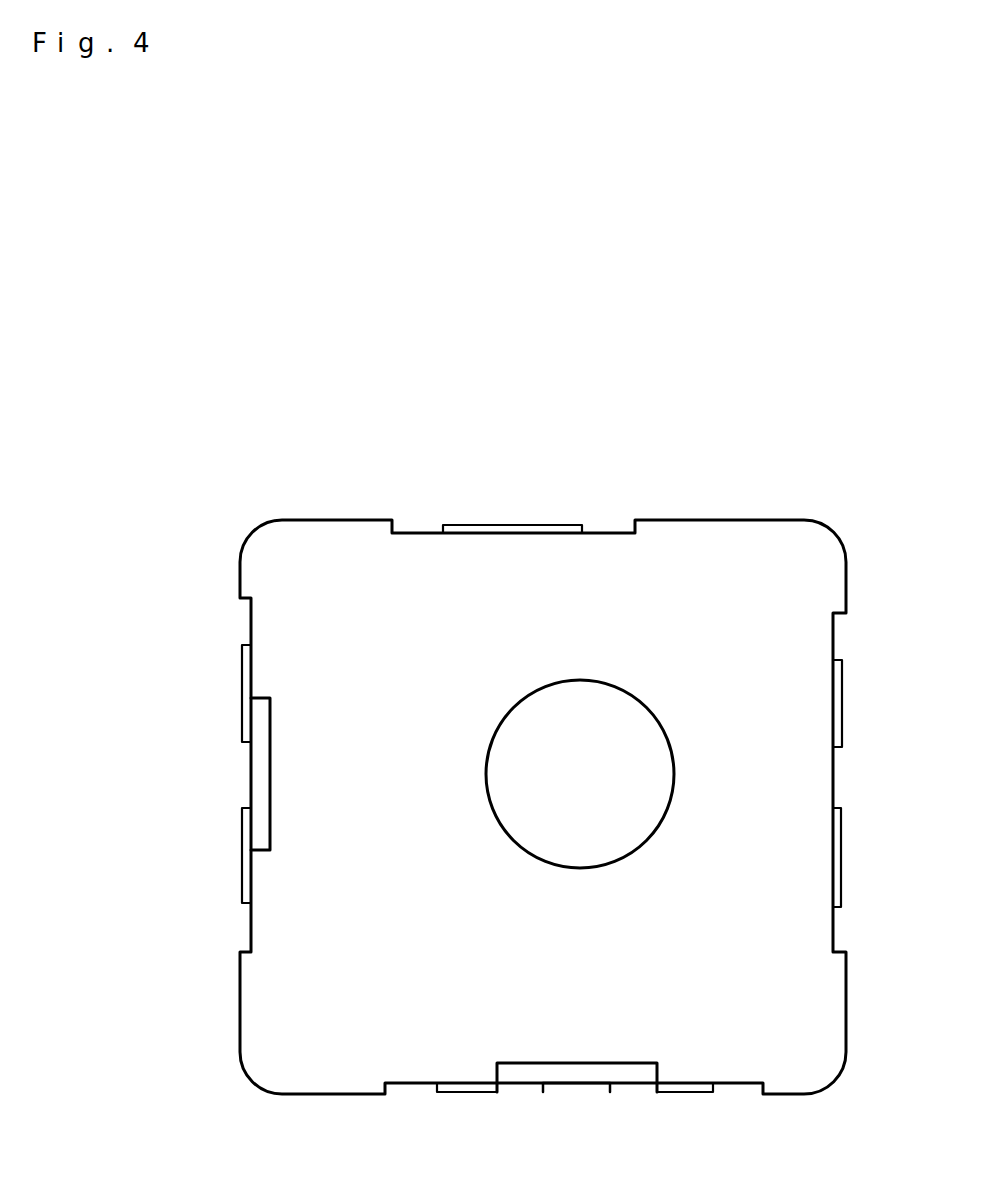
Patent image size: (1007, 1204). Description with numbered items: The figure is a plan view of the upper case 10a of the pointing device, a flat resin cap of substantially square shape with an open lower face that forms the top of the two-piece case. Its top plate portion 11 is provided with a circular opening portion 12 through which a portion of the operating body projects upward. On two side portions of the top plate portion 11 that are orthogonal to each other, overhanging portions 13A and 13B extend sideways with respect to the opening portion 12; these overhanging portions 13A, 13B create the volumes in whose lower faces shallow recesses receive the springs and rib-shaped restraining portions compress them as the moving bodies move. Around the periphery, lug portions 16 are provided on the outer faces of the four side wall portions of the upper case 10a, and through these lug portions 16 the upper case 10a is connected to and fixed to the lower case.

The upper case 10a is at (540, 785).
The top plate portion 11 is at (798, 772).
The circular opening portion 12 is at (603, 702).
The overhanging portion 13A is at (287, 810).
The overhanging portion 13B is at (568, 1050).
The lug portions 16 is at (513, 523).